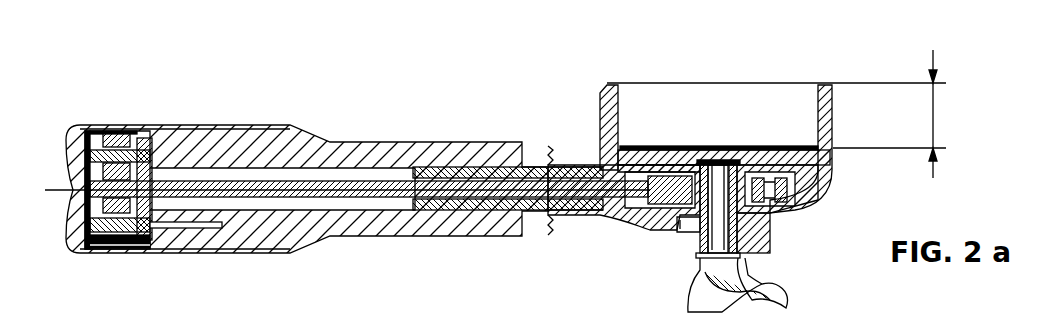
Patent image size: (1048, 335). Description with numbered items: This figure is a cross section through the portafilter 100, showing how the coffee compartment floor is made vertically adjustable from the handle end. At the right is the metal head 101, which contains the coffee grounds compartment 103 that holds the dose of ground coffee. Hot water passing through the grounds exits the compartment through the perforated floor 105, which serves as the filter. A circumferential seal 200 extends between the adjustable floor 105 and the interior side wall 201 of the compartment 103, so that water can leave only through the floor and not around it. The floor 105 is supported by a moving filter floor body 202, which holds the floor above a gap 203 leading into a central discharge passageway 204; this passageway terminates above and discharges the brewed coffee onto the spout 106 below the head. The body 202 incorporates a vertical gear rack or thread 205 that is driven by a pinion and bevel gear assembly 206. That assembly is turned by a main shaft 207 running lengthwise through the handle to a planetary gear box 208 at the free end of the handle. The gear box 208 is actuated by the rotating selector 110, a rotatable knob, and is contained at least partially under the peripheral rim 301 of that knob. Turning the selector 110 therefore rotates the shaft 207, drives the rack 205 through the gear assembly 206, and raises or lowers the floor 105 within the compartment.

The portafilter 100 is at (463, 38).
The head 101 is at (600, 110).
The coffee grounds compartment 103 is at (688, 148).
The perforated floor 105 is at (753, 148).
The spout 106 is at (757, 300).
The selector 110 is at (113, 125).
The circumferential seal 200 is at (630, 148).
The interior side wall 201 is at (813, 103).
The moving filter floor body 202 is at (830, 160).
The gap 203 is at (717, 150).
The central discharge passageway 204 is at (707, 242).
The vertical gear rack 205 is at (763, 247).
The pinion and bevel gear assembly 206 is at (690, 212).
The main shaft 207 is at (357, 195).
The planetary gear box 208 is at (113, 253).
The peripheral rim 301 is at (127, 253).